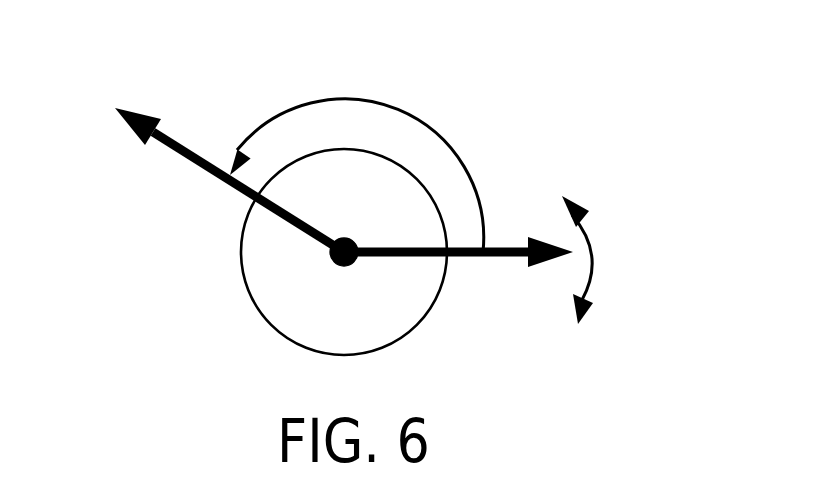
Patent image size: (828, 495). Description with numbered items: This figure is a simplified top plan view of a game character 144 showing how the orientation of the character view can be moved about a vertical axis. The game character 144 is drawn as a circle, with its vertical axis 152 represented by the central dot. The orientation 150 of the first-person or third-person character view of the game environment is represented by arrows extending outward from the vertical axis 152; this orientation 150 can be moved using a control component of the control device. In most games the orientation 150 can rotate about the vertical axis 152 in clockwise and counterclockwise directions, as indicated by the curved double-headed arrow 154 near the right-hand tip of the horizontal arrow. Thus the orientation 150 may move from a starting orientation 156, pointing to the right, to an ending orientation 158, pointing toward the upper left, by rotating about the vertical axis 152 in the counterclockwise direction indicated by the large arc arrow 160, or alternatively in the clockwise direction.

The game character 144 is at (393, 322).
The orientation of the character view 150 is at (329, 176).
The vertical axis 152 is at (332, 270).
The arrow 154 is at (587, 251).
The starting orientation 156 is at (513, 243).
The ending orientation 158 is at (173, 137).
The arrow 160 is at (353, 112).